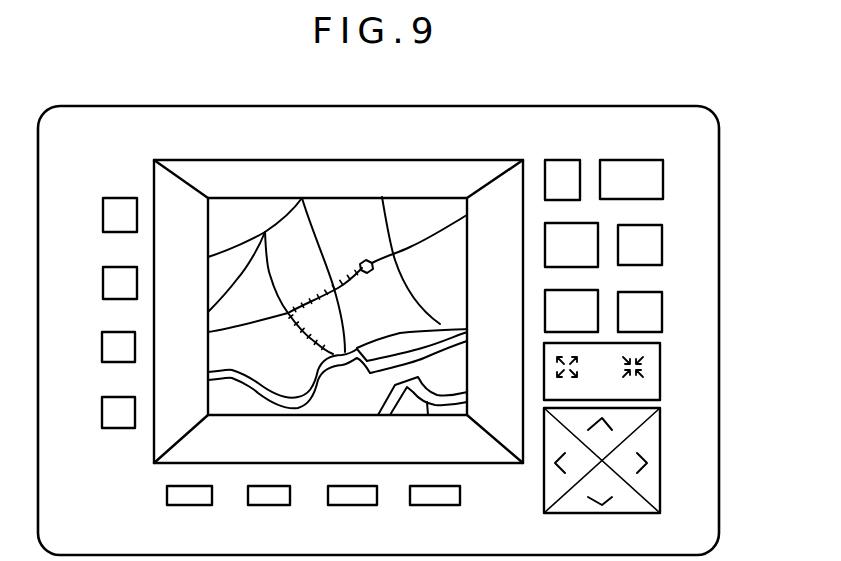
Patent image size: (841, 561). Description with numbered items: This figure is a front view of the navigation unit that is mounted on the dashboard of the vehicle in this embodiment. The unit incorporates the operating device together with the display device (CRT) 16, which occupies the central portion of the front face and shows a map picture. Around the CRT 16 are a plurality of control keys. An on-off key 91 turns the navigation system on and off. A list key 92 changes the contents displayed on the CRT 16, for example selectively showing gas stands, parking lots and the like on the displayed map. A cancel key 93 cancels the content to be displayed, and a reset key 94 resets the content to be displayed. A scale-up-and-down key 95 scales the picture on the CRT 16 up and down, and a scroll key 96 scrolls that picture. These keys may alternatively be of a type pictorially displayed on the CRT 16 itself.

The display device (CRT) 16 is at (452, 196).
The on-off key 91 is at (647, 185).
The list key 92 is at (582, 237).
The cancel key 93 is at (582, 302).
The reset key 94 is at (645, 318).
The scale-up-and-down key 95 is at (640, 388).
The scroll key 96 is at (627, 502).